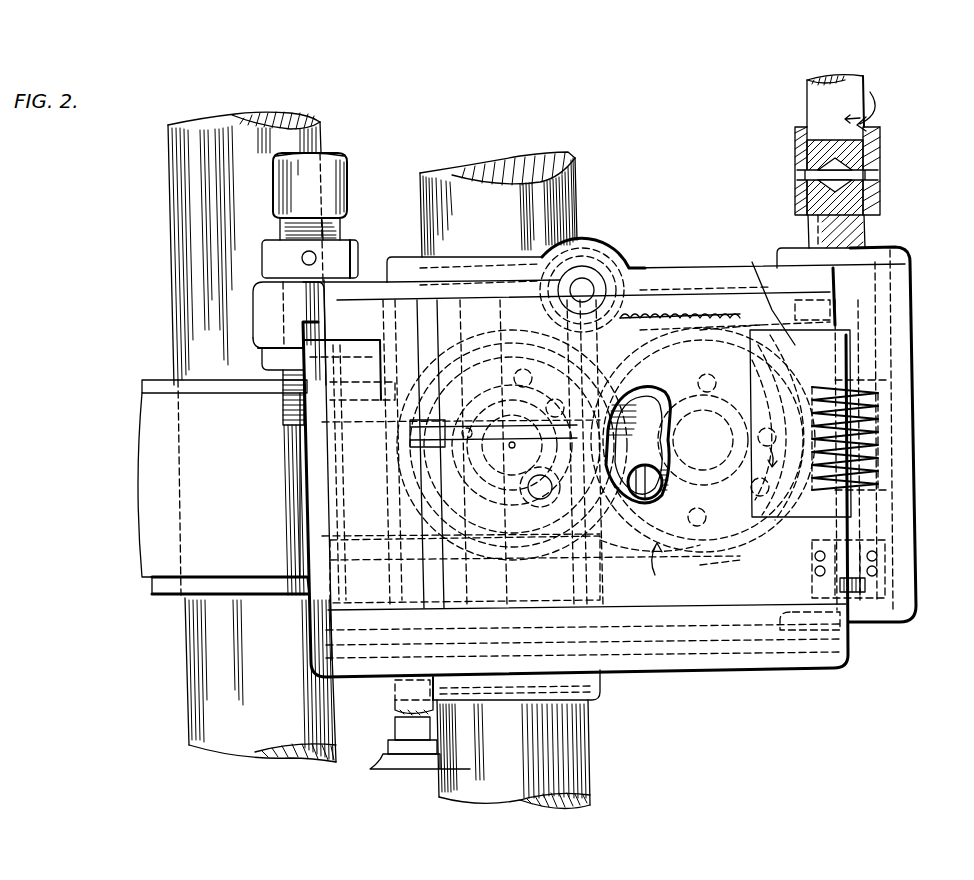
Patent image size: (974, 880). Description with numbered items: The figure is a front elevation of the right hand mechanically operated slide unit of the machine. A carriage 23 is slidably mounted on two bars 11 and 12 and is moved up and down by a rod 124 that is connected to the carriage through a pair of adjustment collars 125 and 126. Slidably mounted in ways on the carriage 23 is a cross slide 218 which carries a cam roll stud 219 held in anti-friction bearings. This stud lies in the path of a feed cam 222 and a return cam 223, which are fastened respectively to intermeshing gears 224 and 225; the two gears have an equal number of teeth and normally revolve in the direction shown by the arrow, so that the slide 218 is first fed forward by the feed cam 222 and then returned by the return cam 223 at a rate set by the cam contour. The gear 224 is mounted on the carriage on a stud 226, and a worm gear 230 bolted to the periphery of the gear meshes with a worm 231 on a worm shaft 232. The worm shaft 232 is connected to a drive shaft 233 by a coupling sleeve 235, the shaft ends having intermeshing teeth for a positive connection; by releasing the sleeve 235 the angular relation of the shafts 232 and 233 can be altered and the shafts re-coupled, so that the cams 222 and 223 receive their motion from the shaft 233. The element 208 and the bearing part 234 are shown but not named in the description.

The bar 11 is at (576, 200).
The bar 12 is at (185, 247).
The carriage 23 is at (864, 662).
The rod 124 is at (346, 186).
The adjustment collar 125 is at (356, 242).
The adjustment collar 126 is at (264, 358).
The cam 208 is at (672, 452).
The cross slide 218 is at (348, 556).
The cam roll stud 219 is at (664, 485).
The feed cam 222 is at (768, 560).
The return cam 223 is at (534, 346).
The gear 224 is at (656, 575).
The gear 225 is at (418, 500).
The stud 226 is at (524, 509).
The worm gear 230 is at (716, 580).
The worm 231 is at (880, 430).
The worm shaft 232 is at (808, 241).
The shaft 233 is at (816, 80).
The bearing 234 is at (794, 150).
The coupling sleeve 235 is at (878, 150).